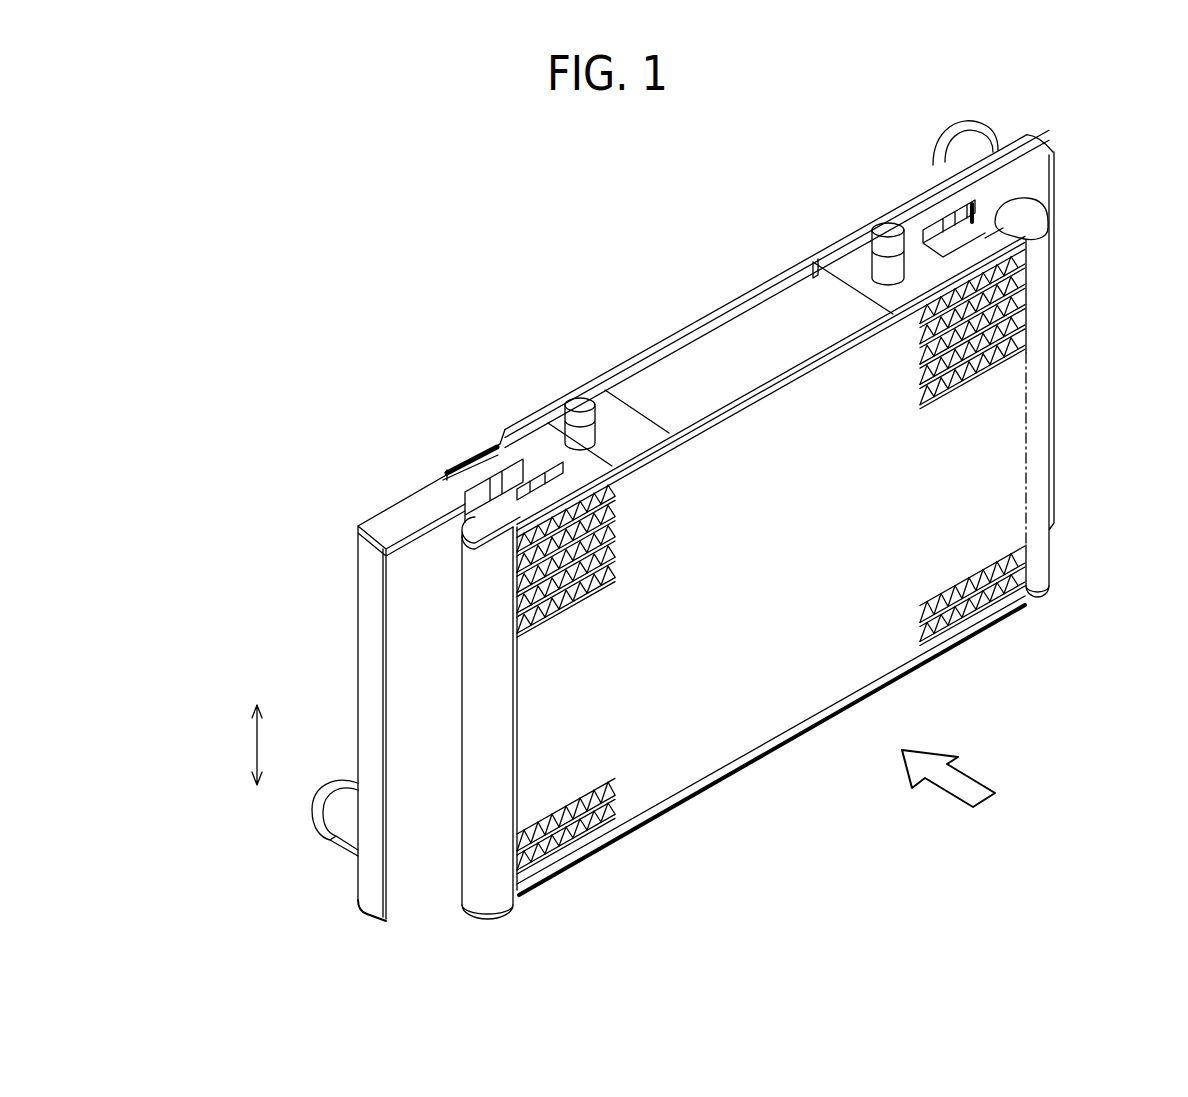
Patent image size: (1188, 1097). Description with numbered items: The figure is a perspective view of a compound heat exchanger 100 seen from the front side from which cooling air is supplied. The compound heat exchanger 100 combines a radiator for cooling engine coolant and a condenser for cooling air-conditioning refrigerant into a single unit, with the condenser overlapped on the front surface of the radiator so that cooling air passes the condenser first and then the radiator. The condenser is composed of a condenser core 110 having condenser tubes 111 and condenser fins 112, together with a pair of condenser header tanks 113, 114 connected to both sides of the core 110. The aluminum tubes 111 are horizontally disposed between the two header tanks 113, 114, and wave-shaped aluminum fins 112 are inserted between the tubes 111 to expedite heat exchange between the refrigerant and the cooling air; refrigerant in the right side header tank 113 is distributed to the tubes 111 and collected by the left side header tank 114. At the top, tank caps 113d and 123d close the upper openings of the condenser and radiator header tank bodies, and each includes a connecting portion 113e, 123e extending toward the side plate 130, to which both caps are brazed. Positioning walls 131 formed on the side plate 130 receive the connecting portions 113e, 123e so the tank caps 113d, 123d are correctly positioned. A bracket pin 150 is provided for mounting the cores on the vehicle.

The compound heat exchanger 100 is at (811, 243).
The condenser core 110 is at (777, 640).
The condenser tubes 111 is at (1010, 305).
The condenser fins 112 is at (1003, 260).
The condenser header tank 113 is at (1032, 369).
The tank cap 113d is at (1025, 203).
The connecting portion 113e is at (1040, 229).
The condenser header tank 114 is at (492, 617).
The tank cap 123d is at (1035, 148).
The connecting portion 123e is at (920, 214).
The side plate 130 is at (658, 345).
The positioning walls 131 is at (936, 230).
The pin 150 is at (882, 238).